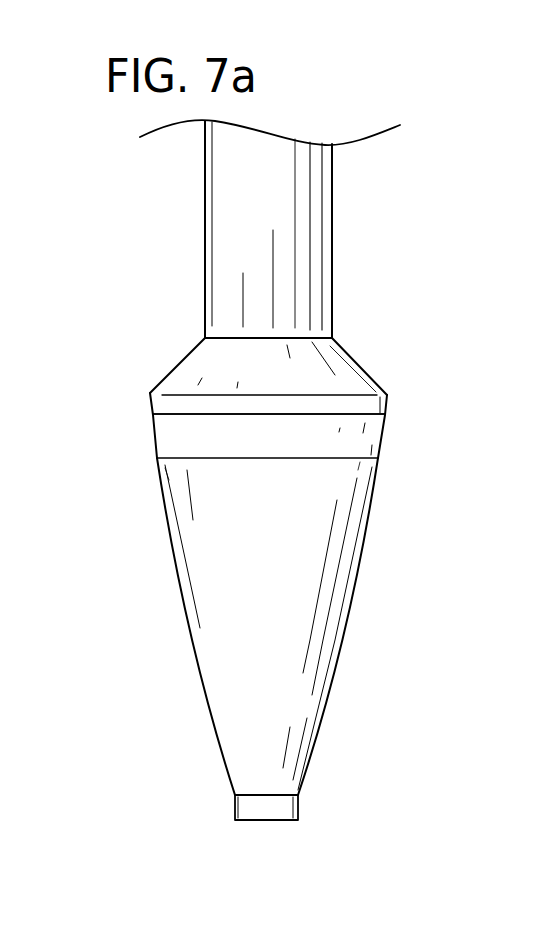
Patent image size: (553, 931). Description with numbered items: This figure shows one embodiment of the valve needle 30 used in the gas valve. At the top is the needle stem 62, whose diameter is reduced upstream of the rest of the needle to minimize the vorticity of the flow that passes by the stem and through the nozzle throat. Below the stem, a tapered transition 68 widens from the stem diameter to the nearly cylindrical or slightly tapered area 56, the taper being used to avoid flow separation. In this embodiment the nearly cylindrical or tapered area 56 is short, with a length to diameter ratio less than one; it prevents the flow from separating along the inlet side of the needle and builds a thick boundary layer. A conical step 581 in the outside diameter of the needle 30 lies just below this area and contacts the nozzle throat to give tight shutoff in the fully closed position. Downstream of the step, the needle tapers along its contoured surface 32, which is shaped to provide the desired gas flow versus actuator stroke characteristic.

The needle stem 62 is at (263, 200).
The tapered transition 68 is at (355, 360).
The nearly cylindrical or slightly tapered area 56 is at (385, 400).
The conical step 581 is at (181, 433).
The valve needle 30 is at (265, 565).
The contoured surface 32 is at (327, 632).